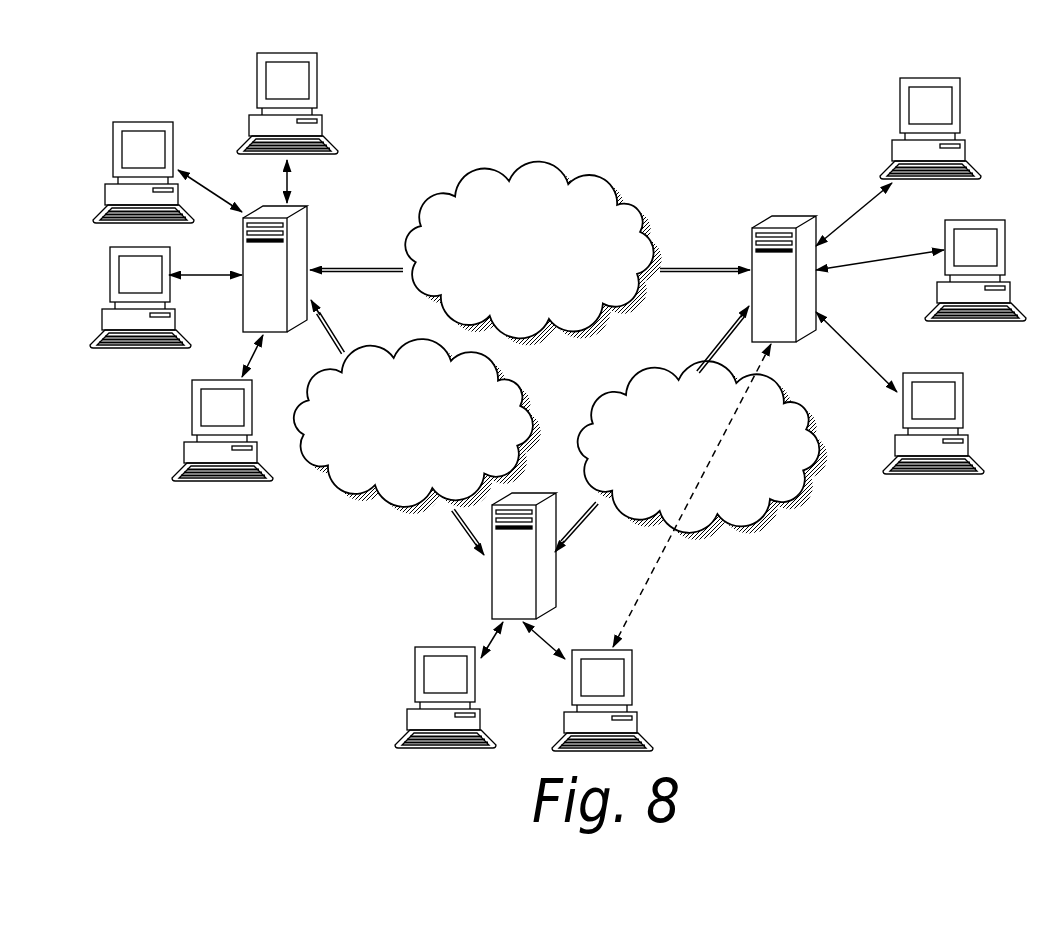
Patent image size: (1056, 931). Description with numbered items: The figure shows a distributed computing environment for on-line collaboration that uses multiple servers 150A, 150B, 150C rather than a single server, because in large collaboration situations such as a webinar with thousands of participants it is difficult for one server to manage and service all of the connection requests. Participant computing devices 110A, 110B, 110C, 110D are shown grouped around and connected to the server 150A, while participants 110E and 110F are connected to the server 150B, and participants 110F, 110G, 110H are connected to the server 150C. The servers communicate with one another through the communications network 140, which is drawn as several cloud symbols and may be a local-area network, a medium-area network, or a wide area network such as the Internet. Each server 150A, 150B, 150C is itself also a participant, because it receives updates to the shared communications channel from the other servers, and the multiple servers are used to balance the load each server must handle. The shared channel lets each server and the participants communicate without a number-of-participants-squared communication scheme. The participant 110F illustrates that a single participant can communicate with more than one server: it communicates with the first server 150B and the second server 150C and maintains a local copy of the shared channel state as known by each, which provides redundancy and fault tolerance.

The participant computing device 110A is at (283, 82).
The participant computing device 110B is at (136, 142).
The participant computing device 110C is at (131, 273).
The participant computing device 110D is at (213, 412).
The participant computing device 110E is at (440, 673).
The participant computing device 110F is at (610, 673).
The participant computing device 110G is at (975, 238).
The participant computing device 110H is at (943, 107).
The communications network 140 is at (716, 462).
The server 150A is at (275, 269).
The first server 150B is at (524, 556).
The second server 150C is at (784, 279).